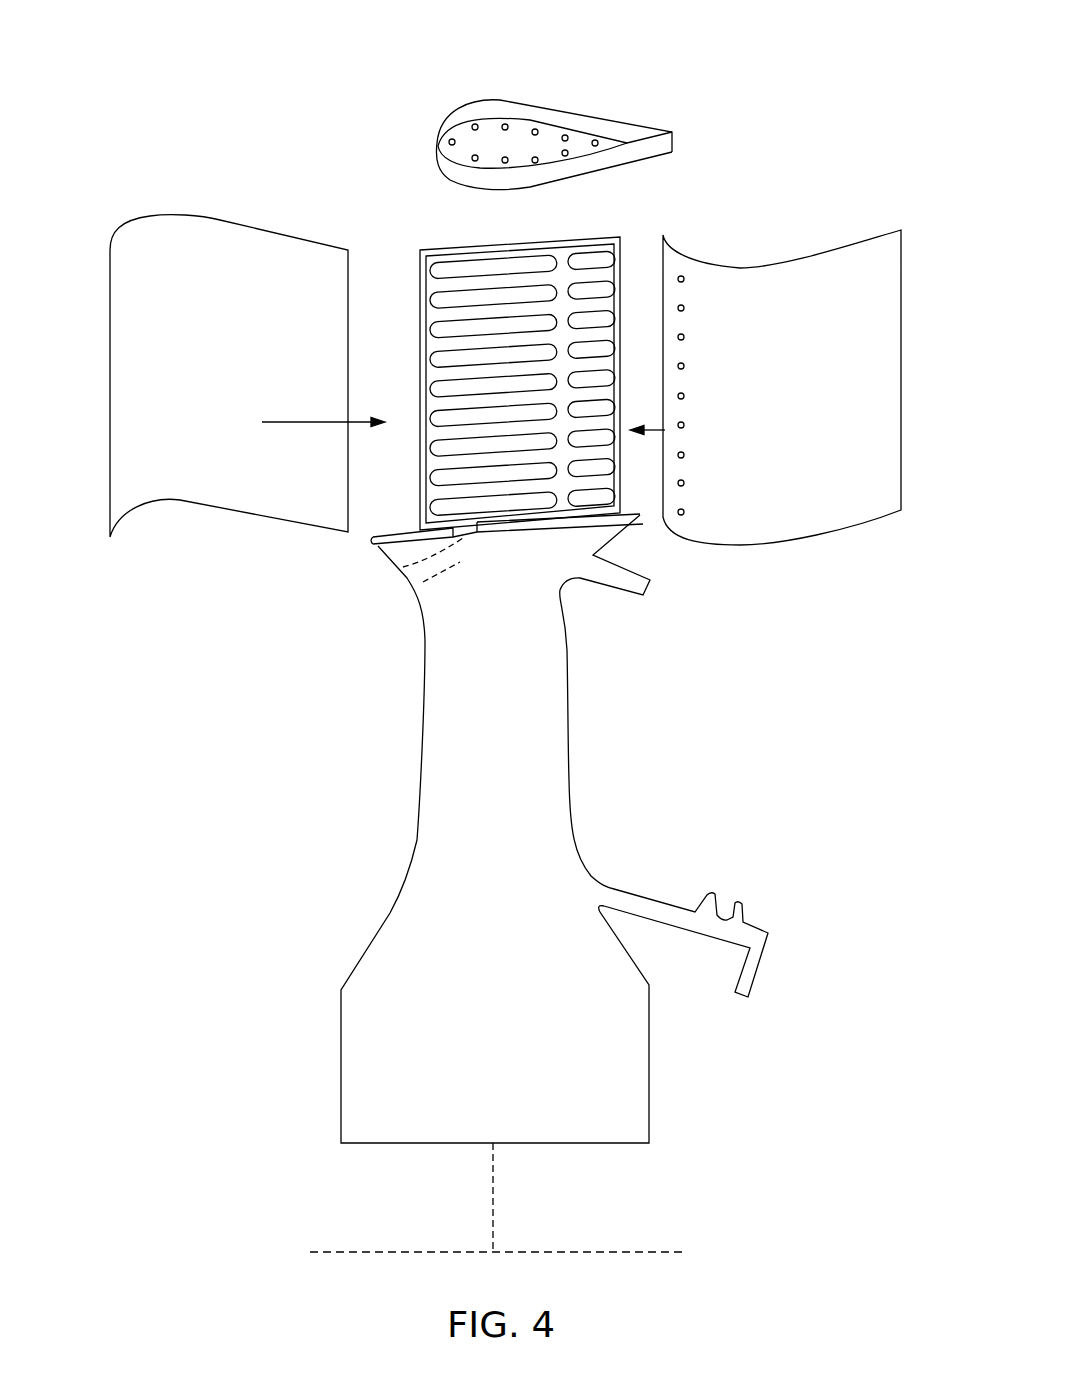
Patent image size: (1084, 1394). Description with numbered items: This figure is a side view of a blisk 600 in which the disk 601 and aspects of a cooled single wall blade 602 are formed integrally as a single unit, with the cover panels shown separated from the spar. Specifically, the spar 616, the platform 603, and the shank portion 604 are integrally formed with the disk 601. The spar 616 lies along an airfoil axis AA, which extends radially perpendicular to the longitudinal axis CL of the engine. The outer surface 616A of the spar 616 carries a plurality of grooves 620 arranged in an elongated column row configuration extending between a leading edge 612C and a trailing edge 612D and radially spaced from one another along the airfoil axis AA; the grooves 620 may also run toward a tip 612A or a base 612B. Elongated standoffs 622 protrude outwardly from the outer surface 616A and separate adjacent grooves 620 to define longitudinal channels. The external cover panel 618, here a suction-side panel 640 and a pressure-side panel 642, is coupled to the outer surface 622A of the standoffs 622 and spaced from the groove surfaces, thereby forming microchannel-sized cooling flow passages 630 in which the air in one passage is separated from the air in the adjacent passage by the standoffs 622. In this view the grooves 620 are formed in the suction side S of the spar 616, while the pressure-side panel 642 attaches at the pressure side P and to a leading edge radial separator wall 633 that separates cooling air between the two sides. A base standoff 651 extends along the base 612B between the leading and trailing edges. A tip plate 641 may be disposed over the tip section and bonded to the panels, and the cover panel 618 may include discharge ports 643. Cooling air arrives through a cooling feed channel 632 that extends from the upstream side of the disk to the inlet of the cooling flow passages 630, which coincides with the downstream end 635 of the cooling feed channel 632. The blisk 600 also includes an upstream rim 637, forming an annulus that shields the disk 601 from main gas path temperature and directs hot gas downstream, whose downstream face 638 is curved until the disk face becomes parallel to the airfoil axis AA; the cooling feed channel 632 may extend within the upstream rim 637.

The blisk 600 is at (263, 117).
The suction side S is at (238, 187).
The pressure side P is at (843, 557).
The cover panel 618 is at (135, 199).
The suction-side panel 640 is at (135, 387).
The pressure-side panel 642 is at (888, 335).
The discharge ports 643 is at (685, 307).
The tip plate 641 is at (583, 140).
The tip 612A is at (564, 62).
The blade 602 is at (693, 151).
The trailing edge 612D is at (665, 216).
The spar 616 is at (440, 250).
The standoffs 622 is at (433, 335).
The outer surface of the standoffs 622A is at (523, 302).
The outer surface of the spar 616A is at (433, 290).
The cooling flow passages 630 is at (602, 362).
The grooves 620 is at (442, 467).
The platform 603 is at (372, 547).
The upstream rim 637 is at (367, 538).
The base 612B is at (642, 518).
The leading edge 612C is at (276, 552).
The disk 601 is at (430, 838).
The shank portion 604 is at (563, 587).
The base standoff 651 is at (555, 524).
The downstream face of the upstream rim 638 is at (371, 565).
The leading edge radial separator wall 633 is at (405, 580).
The cooling feed channel 632 is at (460, 562).
The downstream end of the cooling feed channel 635 is at (463, 535).
The airfoil axis AA is at (495, 1197).
The longitudinal axis CL is at (615, 1252).